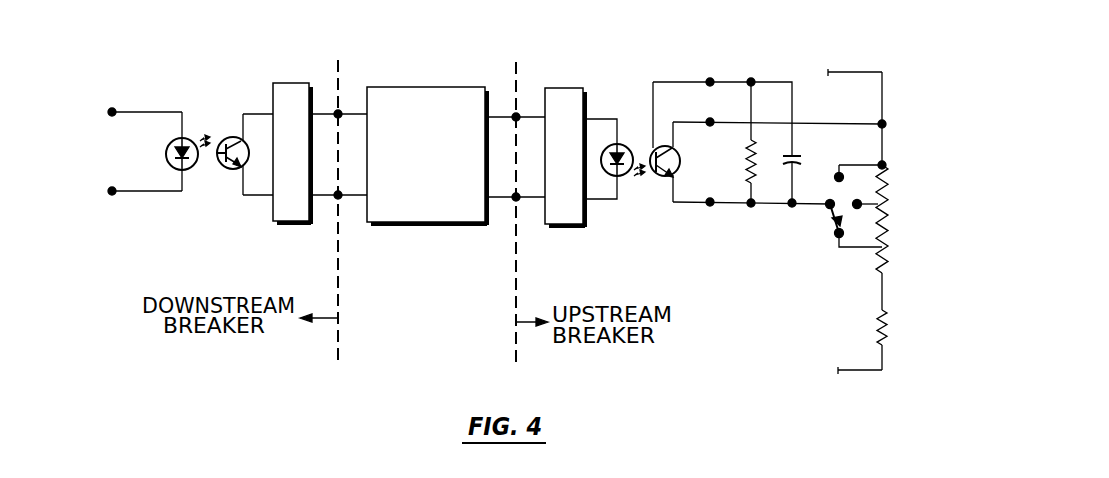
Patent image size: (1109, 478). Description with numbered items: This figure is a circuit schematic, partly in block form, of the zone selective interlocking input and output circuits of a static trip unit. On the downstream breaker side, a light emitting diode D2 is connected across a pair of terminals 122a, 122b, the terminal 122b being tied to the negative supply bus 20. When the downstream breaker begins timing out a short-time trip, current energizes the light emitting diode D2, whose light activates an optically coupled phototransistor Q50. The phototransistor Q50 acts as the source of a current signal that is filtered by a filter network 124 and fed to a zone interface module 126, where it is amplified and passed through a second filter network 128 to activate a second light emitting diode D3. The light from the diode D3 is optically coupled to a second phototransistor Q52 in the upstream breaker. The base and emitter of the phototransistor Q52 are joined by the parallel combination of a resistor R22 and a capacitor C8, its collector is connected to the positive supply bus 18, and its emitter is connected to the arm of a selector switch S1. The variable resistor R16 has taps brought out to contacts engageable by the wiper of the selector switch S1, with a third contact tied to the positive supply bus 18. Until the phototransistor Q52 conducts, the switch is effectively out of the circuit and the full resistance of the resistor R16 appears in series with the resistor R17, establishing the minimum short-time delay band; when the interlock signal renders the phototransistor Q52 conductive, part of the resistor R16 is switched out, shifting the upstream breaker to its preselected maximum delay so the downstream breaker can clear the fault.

The terminal 122a is at (112, 108).
The terminal 122b is at (112, 195).
The light emitting diode D2 is at (166, 151).
The phototransistor Q50 is at (222, 166).
The filter network 124 is at (284, 221).
The zone interface module 126 is at (423, 222).
The filter network 128 is at (567, 224).
The second light emitting diode D3 is at (627, 150).
The second phototransistor Q52 is at (657, 178).
The resistor R22 is at (746, 161).
The capacitor C8 is at (797, 164).
The positive supply bus 18 is at (866, 74).
The selector switch S1 is at (826, 212).
The variable resistor R16 is at (890, 210).
The resistor R17 is at (890, 322).
The negative supply bus 20 is at (862, 372).